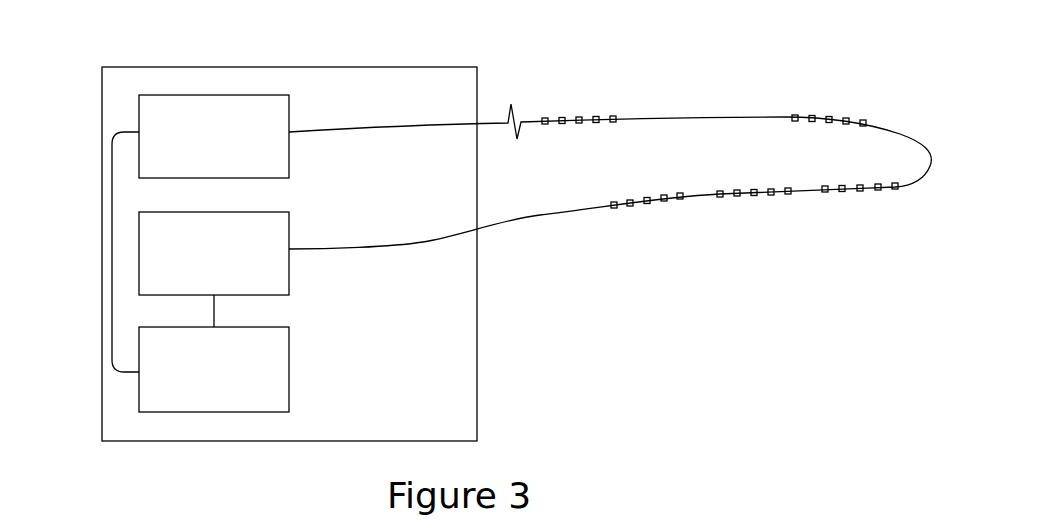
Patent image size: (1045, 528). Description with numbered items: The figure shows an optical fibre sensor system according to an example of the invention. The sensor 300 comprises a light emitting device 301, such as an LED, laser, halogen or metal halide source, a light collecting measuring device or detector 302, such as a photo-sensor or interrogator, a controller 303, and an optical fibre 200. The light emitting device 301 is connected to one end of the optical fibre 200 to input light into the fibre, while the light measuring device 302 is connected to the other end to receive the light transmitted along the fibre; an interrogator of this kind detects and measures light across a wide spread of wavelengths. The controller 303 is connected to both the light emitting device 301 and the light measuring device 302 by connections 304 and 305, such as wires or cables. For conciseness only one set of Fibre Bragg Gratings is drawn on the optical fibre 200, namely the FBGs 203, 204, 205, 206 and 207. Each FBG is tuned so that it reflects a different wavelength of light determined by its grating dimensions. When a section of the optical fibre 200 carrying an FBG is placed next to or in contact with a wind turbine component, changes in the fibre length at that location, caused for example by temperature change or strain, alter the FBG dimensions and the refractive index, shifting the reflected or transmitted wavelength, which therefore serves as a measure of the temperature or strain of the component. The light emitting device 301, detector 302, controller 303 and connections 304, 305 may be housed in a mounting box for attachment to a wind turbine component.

The optical fibre 200 is at (563, 217).
The Fibre Bragg Grating 203 is at (580, 101).
The Fibre Bragg Grating 204 is at (795, 99).
The Fibre Bragg Grating 205 is at (855, 200).
The Fibre Bragg Grating 206 is at (745, 210).
The Fibre Bragg Grating 207 is at (643, 218).
The sensor 300 is at (458, 365).
The light emitting device 301 is at (237, 143).
The light measuring device 302 is at (237, 260).
The controller 303 is at (237, 377).
The connection 304 is at (216, 307).
The connection 305 is at (108, 308).